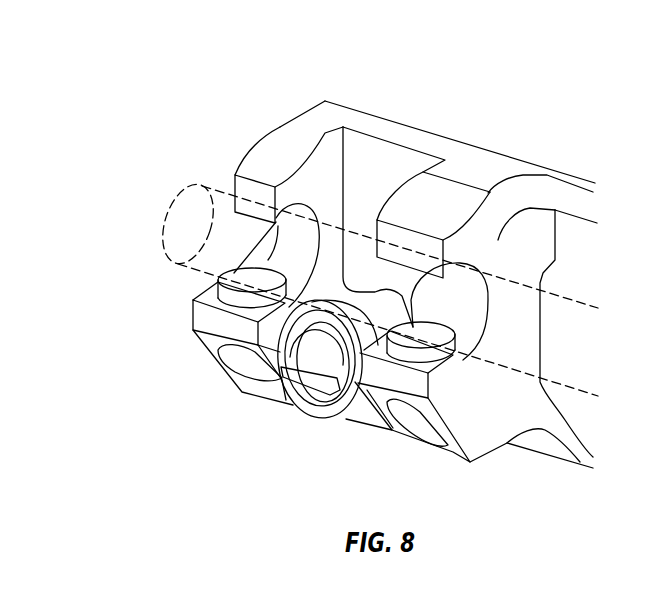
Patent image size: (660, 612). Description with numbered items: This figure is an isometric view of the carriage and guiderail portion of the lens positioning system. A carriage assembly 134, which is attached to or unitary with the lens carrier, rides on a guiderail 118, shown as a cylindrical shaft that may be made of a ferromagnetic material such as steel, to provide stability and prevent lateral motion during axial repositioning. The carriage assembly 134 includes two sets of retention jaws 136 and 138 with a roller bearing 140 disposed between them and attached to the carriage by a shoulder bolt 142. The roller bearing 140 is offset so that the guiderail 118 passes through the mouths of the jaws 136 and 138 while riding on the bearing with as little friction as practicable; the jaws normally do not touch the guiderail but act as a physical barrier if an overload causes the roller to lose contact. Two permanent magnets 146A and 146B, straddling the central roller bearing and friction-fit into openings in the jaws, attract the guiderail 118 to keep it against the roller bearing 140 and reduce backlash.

The guiderail 118 is at (177, 219).
The carriage assembly 134 is at (172, 452).
The jaw 136 is at (495, 257).
The jaw 138 is at (231, 158).
The roller bearing 140 is at (312, 398).
The shoulder bolt 142 is at (303, 393).
The permanent magnet 146A is at (432, 336).
The permanent magnet 146B is at (253, 277).